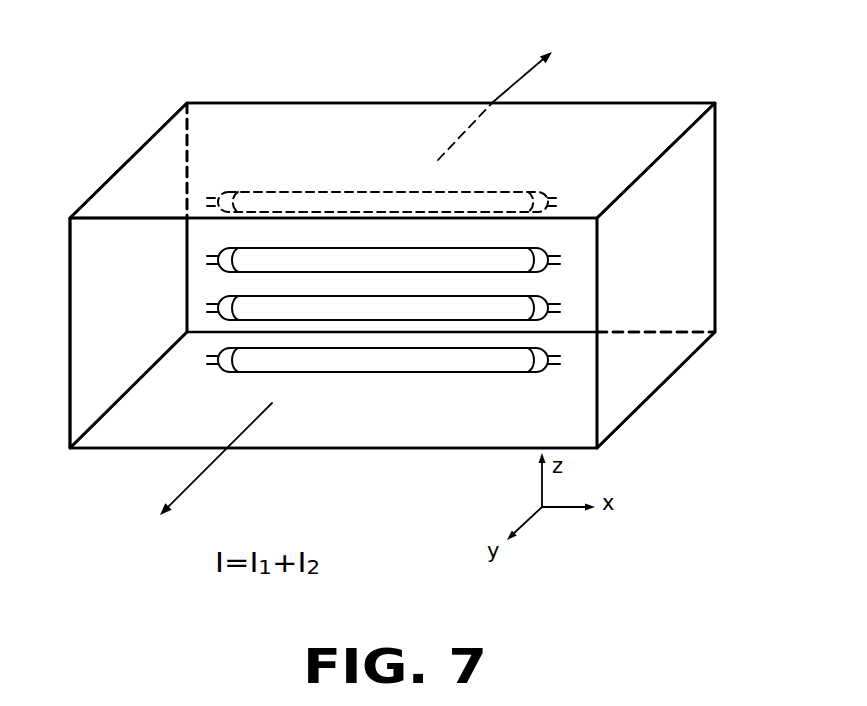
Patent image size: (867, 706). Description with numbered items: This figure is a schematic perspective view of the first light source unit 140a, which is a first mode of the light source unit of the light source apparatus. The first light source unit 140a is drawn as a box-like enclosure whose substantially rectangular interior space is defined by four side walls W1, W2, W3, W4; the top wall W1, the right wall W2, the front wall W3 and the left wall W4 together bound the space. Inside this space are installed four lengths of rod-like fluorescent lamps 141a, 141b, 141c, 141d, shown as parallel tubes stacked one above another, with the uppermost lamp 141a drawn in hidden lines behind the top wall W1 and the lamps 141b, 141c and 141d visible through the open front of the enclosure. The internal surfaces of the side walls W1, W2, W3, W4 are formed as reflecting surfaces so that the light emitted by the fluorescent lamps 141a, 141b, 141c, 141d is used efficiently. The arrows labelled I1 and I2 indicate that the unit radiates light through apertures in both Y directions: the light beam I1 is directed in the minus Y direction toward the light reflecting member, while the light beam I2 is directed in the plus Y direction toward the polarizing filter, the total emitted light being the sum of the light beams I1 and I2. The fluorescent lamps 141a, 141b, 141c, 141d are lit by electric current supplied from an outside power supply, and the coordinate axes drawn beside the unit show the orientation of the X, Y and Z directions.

The first light source unit 140a is at (410, 47).
The fluorescent lamp 141a is at (299, 200).
The fluorescent lamp 141b is at (288, 257).
The fluorescent lamp 141c is at (288, 305).
The fluorescent lamp 141d is at (330, 358).
The side wall W1 is at (643, 132).
The side wall W2 is at (692, 305).
The side wall W3 is at (408, 436).
The side wall W4 is at (140, 194).
The light beam I1 is at (216, 459).
The light beam I2 is at (495, 104).